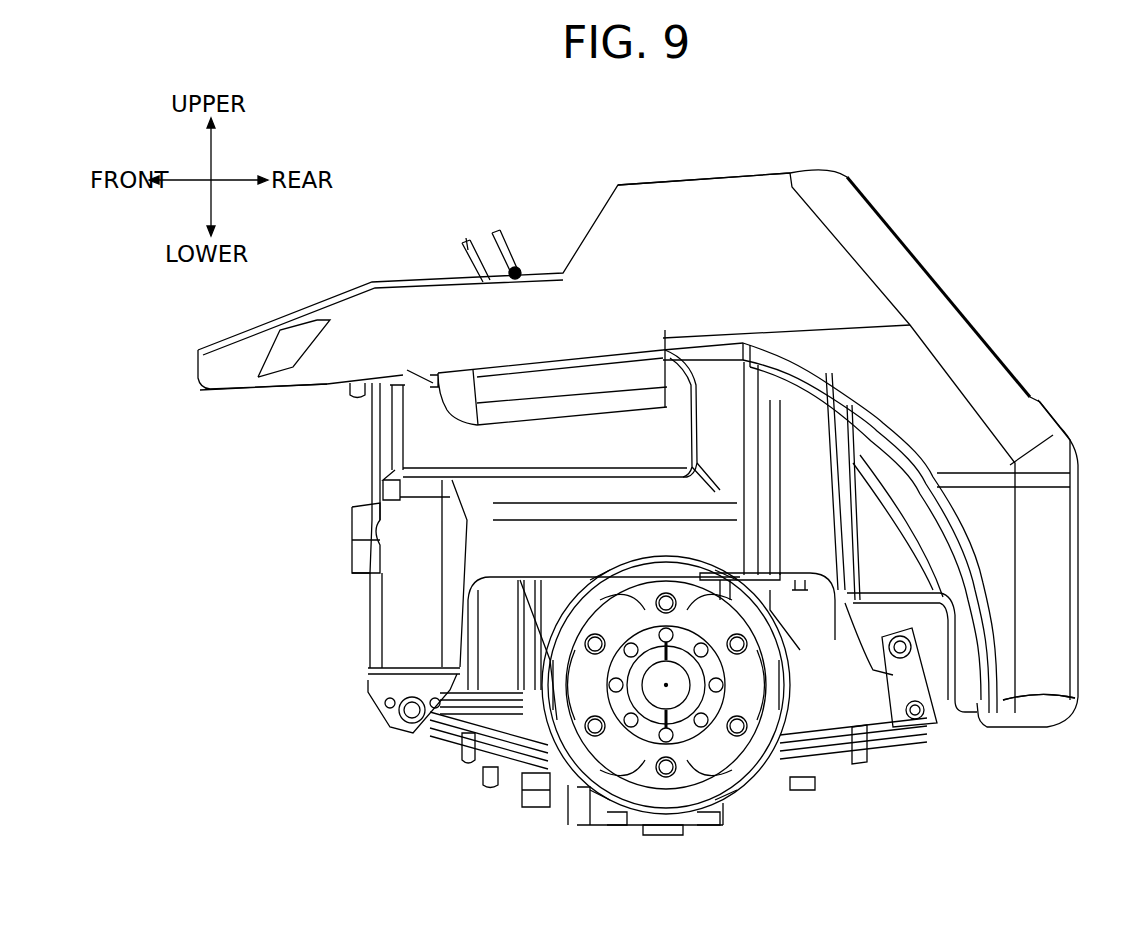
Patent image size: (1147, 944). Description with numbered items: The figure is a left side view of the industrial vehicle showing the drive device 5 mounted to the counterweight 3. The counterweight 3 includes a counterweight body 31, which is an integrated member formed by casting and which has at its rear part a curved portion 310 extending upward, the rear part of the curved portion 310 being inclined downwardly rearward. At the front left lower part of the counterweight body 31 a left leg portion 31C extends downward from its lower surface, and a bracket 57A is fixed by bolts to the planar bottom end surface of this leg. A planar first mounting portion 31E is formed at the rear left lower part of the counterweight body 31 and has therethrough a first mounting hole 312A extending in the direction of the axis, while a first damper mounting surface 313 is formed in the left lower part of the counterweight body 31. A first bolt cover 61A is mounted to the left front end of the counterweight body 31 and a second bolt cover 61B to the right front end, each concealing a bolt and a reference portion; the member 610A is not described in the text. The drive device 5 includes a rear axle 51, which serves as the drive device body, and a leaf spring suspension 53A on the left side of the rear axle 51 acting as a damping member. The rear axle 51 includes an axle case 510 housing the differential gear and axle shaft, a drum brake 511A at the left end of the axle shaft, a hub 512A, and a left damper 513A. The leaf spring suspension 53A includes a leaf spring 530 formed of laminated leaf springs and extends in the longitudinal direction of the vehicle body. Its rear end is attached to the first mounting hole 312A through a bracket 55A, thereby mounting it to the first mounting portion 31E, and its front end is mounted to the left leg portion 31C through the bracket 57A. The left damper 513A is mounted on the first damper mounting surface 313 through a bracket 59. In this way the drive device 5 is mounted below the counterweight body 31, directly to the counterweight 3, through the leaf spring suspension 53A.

The counterweight 3 is at (918, 172).
The curved portion 310 is at (743, 185).
The counterweight body 31 is at (218, 392).
The second bolt cover 61B is at (362, 398).
The bracket mount 610A is at (350, 525).
The first bolt cover 61A is at (356, 568).
The left leg portion 31C is at (395, 624).
The bracket 57A is at (372, 693).
The rear axle 51 is at (803, 676).
The hub 512A is at (645, 622).
The drum brake 511A is at (700, 570).
The bracket 59 is at (795, 572).
The first damper mounting surface 313 is at (780, 555).
The left damper 513A is at (837, 605).
The first mounting portion 31E is at (945, 587).
The first mounting hole 312A is at (890, 651).
The bracket 55A is at (905, 683).
The leaf spring suspension 53A is at (912, 737).
The drive device 5 is at (803, 783).
The leaf spring 530 is at (483, 758).
The axle case 510 is at (540, 796).